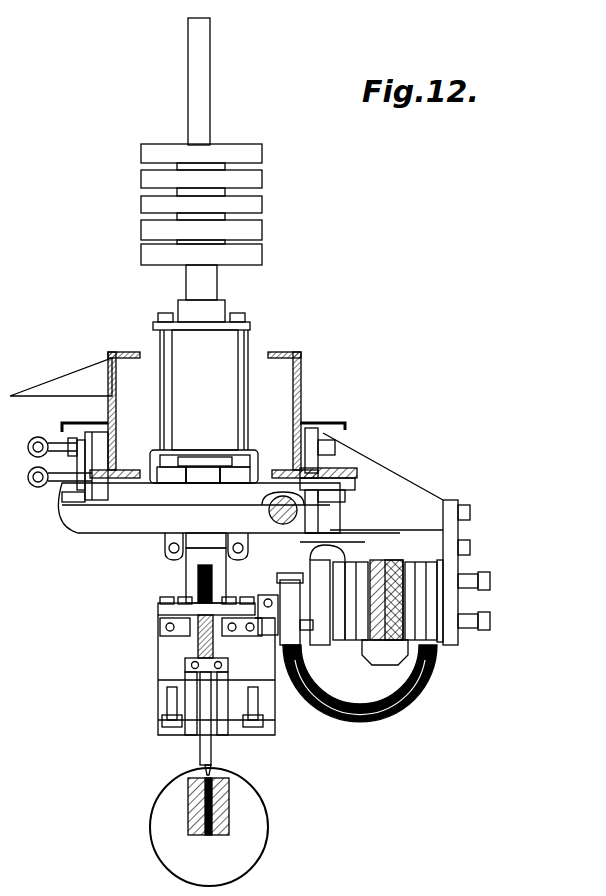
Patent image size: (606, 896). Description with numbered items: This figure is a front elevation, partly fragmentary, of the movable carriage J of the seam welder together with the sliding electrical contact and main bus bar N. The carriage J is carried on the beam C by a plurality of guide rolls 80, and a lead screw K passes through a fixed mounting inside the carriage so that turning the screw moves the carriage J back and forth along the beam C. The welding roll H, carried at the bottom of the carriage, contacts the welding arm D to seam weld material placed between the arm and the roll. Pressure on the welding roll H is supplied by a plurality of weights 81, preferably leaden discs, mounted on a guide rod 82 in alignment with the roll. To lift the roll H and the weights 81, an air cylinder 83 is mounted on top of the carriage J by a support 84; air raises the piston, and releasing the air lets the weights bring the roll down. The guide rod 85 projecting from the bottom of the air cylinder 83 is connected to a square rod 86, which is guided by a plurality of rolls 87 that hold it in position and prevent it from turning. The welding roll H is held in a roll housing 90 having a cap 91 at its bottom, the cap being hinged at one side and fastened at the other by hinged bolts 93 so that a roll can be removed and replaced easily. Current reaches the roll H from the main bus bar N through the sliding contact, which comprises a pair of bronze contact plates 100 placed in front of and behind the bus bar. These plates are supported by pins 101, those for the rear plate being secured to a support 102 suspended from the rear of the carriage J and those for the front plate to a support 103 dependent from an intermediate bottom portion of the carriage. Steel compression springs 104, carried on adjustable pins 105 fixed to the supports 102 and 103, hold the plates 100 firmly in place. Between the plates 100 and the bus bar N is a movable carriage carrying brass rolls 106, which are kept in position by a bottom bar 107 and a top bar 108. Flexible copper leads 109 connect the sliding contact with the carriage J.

The guide rolls 80 is at (90, 440).
The weights 81 is at (258, 161).
The rod 82 is at (200, 88).
The air cylinder 83 is at (204, 390).
The support 84 is at (203, 475).
The guide rod 85 is at (203, 475).
The square rod 86 is at (186, 588).
The rolls 87 is at (165, 550).
The roll housing 90 is at (198, 690).
The cap 91 is at (158, 718).
The hinged bolts 93 is at (172, 728).
The sliding contact plates 100 is at (353, 565).
The pins 101 is at (508, 602).
The support 102 is at (470, 510).
The support 103 is at (312, 552).
The compression springs 104 is at (470, 558).
The adjustable pins 105 is at (492, 581).
The brass rolls 106 is at (405, 575).
The bottom bar 107 is at (432, 680).
The top bar 108 is at (400, 665).
The flexible copper leads 109 is at (322, 716).
The beam C is at (115, 372).
The lead screw K is at (268, 512).
The movable carriage J is at (397, 501).
The main bus bar N is at (381, 549).
The welding roll H is at (215, 745).
The welding arm D is at (209, 827).